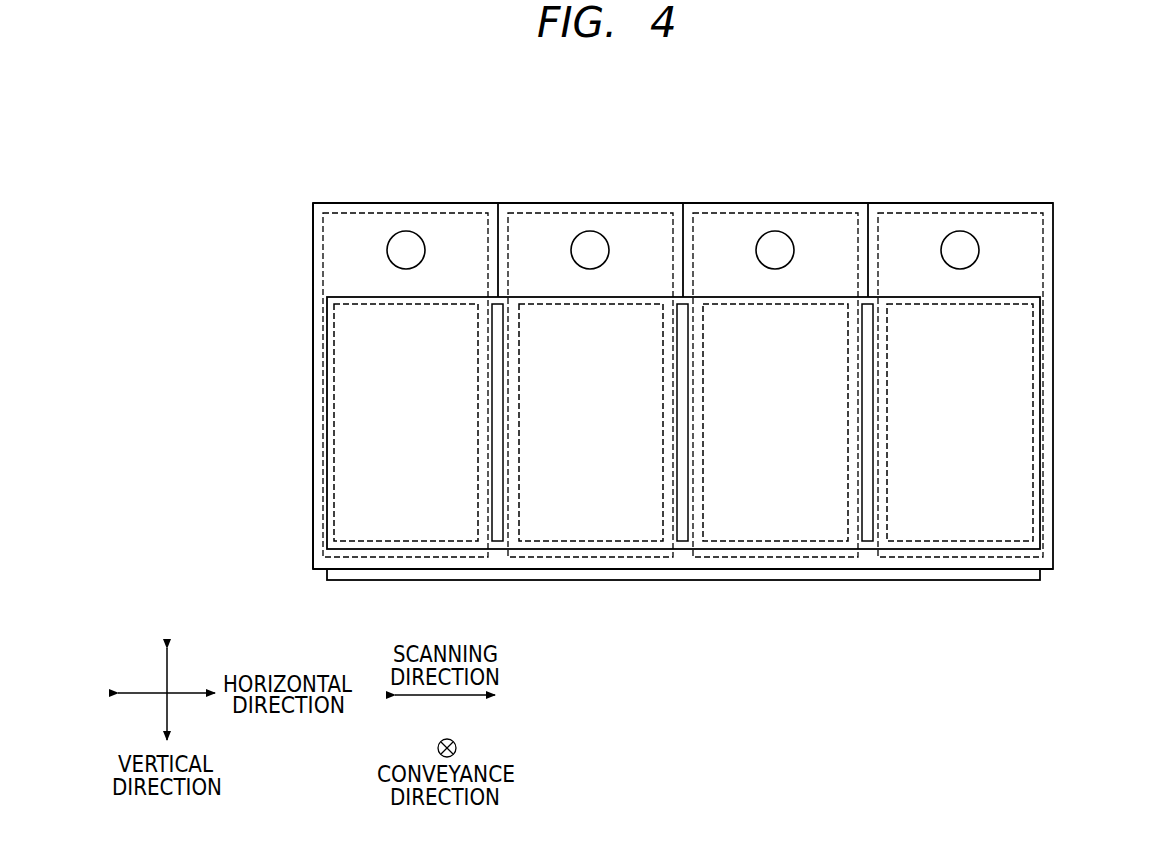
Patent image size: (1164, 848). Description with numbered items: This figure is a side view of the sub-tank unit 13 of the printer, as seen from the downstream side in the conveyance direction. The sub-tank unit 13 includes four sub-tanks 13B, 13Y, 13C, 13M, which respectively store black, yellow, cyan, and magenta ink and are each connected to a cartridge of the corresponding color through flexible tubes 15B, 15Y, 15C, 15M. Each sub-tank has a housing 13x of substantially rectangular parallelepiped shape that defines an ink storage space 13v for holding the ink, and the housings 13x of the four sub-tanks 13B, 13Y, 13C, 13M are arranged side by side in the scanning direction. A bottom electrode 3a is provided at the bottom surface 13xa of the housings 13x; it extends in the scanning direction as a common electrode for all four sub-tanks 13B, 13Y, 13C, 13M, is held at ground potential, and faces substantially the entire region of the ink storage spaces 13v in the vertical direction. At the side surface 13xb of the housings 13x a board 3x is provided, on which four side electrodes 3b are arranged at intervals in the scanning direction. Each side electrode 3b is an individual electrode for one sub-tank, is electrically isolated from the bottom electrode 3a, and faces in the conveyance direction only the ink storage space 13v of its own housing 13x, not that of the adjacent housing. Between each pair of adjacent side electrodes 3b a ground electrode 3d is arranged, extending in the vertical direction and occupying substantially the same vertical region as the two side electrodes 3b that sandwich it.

The sub-tank unit 13 is at (972, 94).
The sub-tank 13B is at (392, 203).
The sub-tank 13Y is at (577, 203).
The sub-tank 13C is at (762, 203).
The sub-tank 13M is at (945, 203).
The flexible tube 15B is at (406, 243).
The flexible tube 15Y is at (590, 243).
The flexible tube 15C is at (775, 243).
The flexible tube 15M is at (960, 243).
The housing 13x is at (357, 203).
The ink storage space 13v is at (451, 234).
The board 3x is at (1015, 297).
The side surface 13xb is at (318, 385).
The bottom surface 13xa is at (376, 572).
The bottom electrode 3a is at (1040, 577).
The side electrode 3b is at (420, 417).
The ground electrode 3d is at (496, 542).